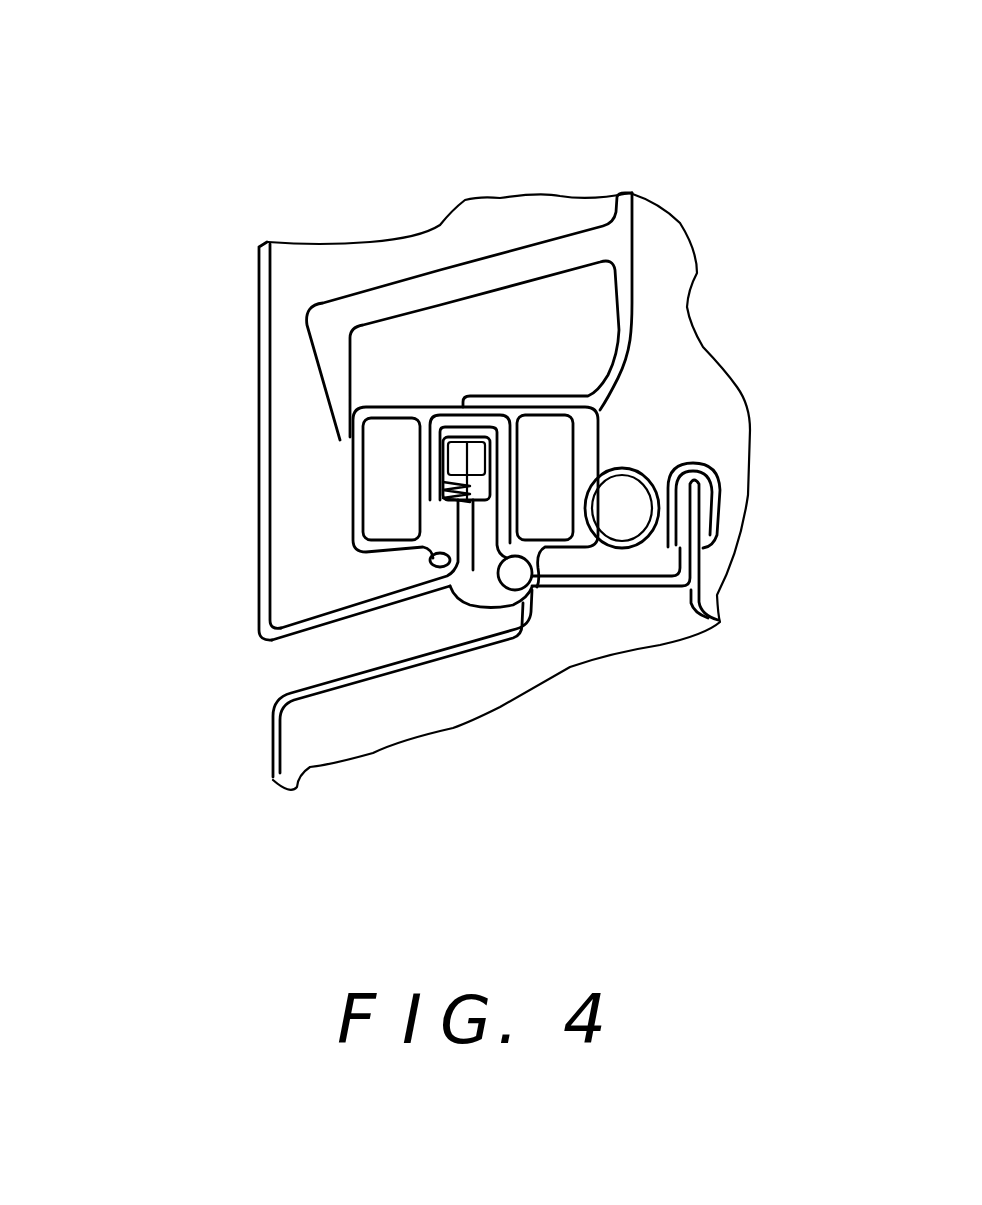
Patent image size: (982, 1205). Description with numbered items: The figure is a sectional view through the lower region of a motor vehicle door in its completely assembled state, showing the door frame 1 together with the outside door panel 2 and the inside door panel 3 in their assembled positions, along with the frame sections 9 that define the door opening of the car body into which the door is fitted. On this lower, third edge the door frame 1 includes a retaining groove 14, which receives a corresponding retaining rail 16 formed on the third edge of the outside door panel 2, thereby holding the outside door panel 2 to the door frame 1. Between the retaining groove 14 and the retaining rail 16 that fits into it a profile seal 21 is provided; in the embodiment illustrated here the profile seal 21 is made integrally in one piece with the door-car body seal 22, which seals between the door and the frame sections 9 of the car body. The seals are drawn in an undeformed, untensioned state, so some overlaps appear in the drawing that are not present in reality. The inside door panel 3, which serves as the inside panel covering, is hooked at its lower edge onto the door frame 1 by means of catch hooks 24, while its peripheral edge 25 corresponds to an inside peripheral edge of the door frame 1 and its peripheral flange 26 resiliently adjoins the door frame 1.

The door frame 1 is at (357, 490).
The outside door panel 2 is at (264, 358).
The inside door panel 3 is at (623, 287).
The frame sections 9 is at (503, 637).
The retaining groove 14 is at (467, 467).
The retaining rail 16 is at (493, 490).
The profile seals 21 is at (430, 553).
The door-car body seal 22 is at (668, 547).
The catch hooks 24 is at (460, 287).
The peripheral edge 25 is at (520, 400).
The peripheral flange 26 is at (600, 407).